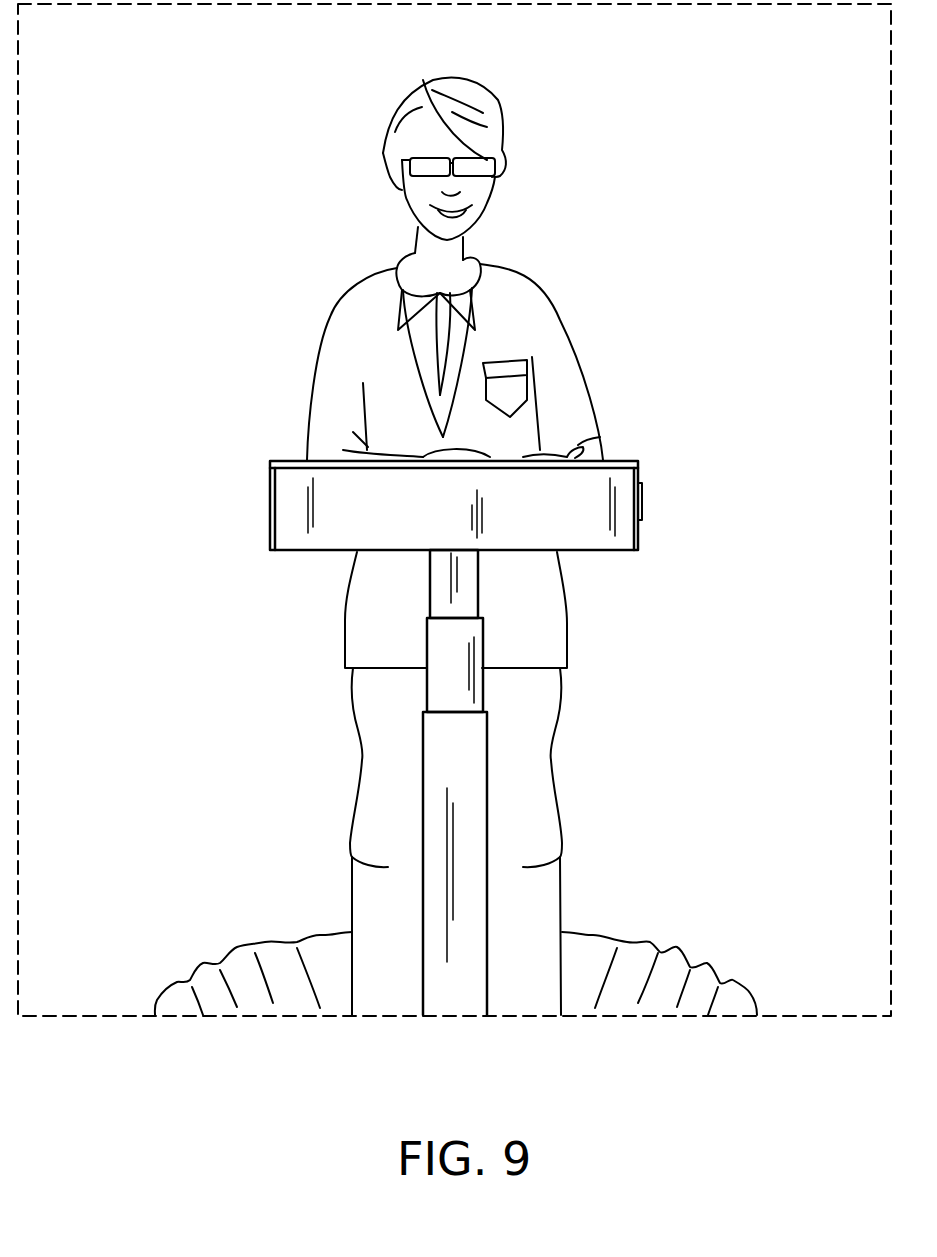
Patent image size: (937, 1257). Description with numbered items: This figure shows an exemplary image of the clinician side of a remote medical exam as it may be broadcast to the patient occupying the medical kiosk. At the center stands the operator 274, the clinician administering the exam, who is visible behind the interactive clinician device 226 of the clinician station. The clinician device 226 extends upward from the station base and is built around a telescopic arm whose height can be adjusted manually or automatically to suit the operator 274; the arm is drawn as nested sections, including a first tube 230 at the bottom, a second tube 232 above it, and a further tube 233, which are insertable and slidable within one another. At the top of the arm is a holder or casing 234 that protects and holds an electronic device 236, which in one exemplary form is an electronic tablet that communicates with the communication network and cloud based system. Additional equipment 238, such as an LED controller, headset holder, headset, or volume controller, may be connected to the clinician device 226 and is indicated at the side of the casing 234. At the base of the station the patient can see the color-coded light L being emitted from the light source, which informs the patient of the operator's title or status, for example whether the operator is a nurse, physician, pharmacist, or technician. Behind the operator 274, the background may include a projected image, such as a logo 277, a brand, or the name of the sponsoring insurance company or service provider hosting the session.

The logo 277 is at (344, 64).
The operator 274 is at (580, 214).
The interactive clinician device 226 is at (458, 710).
The holder or casing 234 is at (572, 526).
The electronic device 236 is at (583, 455).
The additional equipment 238 is at (644, 500).
The upper column section 233 is at (467, 592).
The second tube 232 is at (468, 695).
The first tube 230 is at (472, 870).
The color-coded light L is at (231, 946).